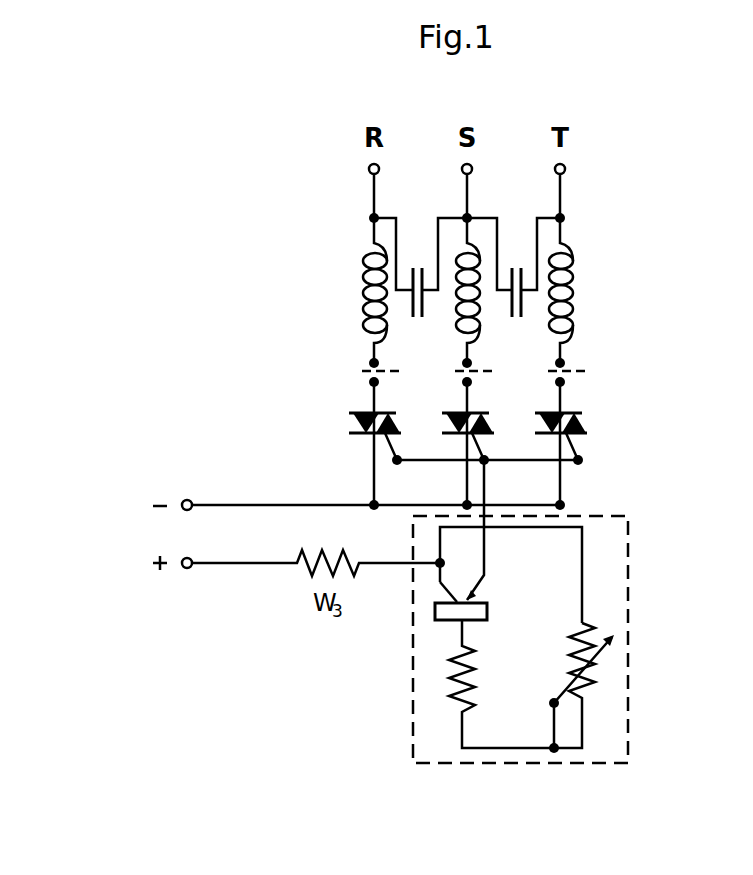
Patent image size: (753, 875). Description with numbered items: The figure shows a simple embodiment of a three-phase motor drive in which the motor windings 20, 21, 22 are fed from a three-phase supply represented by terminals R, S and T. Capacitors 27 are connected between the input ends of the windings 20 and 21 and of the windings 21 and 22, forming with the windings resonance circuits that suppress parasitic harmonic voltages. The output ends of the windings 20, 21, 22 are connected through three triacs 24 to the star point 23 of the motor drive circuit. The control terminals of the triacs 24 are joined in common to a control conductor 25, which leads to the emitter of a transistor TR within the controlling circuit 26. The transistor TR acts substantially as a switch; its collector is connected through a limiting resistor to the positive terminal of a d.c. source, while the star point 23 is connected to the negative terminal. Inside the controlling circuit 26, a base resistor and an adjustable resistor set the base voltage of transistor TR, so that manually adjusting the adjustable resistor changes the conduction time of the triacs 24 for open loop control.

The motor winding 20 is at (365, 265).
The motor winding 21 is at (478, 247).
The motor winding 22 is at (573, 253).
The star point 23 is at (540, 505).
The triacs 24 is at (352, 420).
The control conductor 25 is at (484, 483).
The controlling circuit 26 is at (636, 561).
The capacitors 27 is at (512, 304).